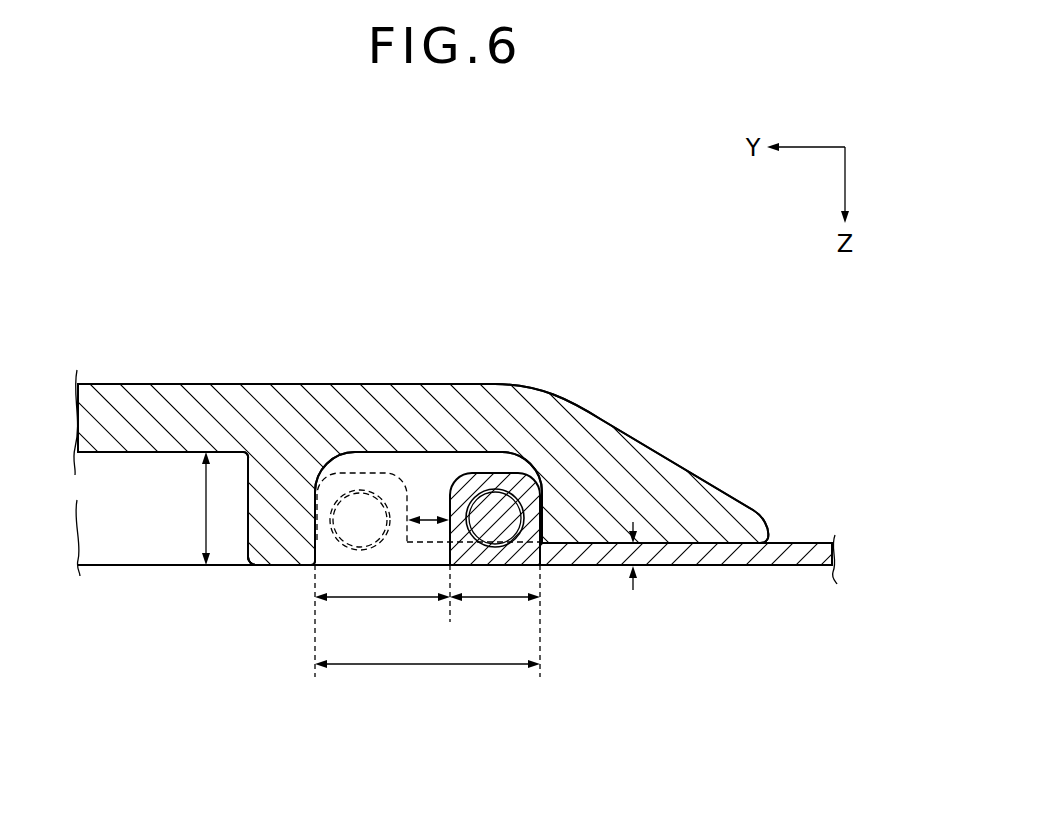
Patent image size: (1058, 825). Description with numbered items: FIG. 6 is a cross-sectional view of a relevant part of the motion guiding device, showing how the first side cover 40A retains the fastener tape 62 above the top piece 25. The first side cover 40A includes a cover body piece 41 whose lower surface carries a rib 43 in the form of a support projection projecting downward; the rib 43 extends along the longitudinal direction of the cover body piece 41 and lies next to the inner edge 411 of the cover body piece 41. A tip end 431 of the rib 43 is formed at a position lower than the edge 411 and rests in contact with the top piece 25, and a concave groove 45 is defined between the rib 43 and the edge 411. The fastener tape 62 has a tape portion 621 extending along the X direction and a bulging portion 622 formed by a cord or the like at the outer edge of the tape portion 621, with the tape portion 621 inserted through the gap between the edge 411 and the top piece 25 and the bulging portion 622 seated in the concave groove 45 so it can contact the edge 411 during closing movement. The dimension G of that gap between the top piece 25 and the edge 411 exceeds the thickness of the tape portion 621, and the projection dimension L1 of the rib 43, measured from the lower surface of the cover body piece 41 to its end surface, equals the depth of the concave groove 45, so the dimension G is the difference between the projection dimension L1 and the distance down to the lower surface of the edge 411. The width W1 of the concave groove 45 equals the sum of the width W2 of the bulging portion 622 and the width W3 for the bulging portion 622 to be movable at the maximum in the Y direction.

The first side cover 40A is at (122, 395).
The cover body piece 41 is at (162, 382).
The edge 411 is at (640, 450).
The rib 43 is at (262, 546).
The tip end 431 is at (285, 567).
The concave groove 45 is at (436, 462).
The top piece 25 is at (175, 565).
The fastener tape 62 is at (798, 562).
The tape portion 621 is at (780, 562).
The bulging portion 622 is at (362, 510).
The projection dimension L1 is at (200, 507).
The dimension of the gap G is at (635, 555).
The width of the concave groove W1 is at (430, 667).
The width of the bulging portion W2 is at (497, 600).
The width for the bulging portion to be movable W3 is at (385, 600).